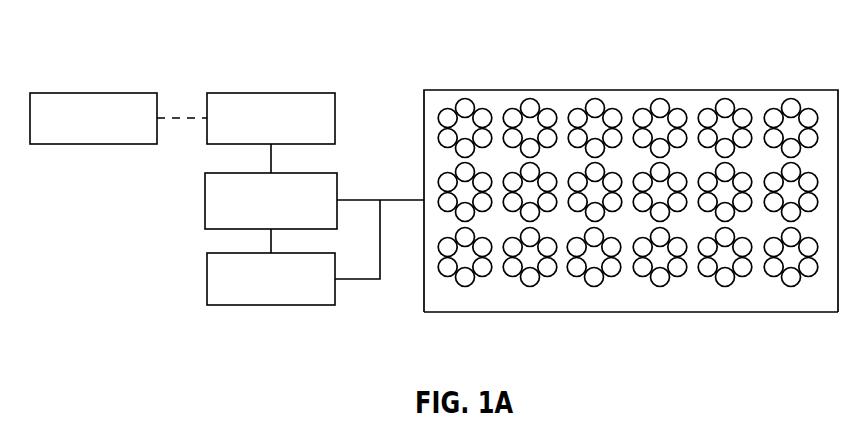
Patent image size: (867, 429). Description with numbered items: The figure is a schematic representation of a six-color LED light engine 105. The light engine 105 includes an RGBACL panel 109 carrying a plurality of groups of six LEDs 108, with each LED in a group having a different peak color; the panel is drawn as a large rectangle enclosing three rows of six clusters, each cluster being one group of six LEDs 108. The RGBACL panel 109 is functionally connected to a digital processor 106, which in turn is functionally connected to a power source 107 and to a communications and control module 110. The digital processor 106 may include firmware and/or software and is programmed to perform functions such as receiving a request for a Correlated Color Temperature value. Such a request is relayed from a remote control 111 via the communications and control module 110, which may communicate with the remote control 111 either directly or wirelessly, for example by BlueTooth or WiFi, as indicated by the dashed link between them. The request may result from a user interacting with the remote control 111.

The six-color LED light engine 105 is at (473, 361).
The digital processor 106 is at (271, 201).
The power source 107 is at (271, 279).
The group of six LEDs 108 is at (655, 102).
The RGBACL panel 109 is at (632, 313).
The communications and control module 110 is at (271, 118).
The remote control 111 is at (93, 118).